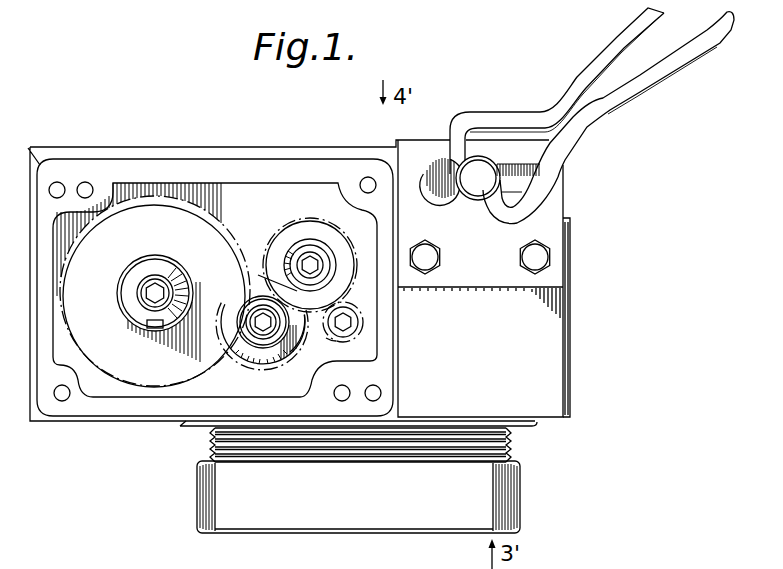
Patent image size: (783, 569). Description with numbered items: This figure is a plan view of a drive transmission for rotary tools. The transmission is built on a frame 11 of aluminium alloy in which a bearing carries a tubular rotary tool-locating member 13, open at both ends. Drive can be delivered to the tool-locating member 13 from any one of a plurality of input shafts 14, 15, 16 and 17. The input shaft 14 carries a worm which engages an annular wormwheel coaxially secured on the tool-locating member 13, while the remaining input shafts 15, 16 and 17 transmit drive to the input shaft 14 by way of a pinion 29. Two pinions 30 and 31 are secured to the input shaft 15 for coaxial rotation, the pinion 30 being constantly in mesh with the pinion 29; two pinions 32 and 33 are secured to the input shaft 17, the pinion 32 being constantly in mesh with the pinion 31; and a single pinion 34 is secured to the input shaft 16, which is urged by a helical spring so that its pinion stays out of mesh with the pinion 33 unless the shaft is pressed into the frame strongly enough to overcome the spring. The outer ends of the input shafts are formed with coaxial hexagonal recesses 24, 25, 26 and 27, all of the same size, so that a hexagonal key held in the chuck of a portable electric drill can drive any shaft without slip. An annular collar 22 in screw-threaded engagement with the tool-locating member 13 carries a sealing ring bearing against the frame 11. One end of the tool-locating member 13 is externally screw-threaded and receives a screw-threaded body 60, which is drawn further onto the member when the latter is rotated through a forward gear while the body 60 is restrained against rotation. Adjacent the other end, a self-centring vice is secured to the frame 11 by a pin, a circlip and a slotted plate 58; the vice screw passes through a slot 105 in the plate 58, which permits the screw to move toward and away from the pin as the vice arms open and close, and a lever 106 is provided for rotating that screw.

The frame 11 is at (553, 333).
The tubular rotary tool-locating member 13 is at (525, 440).
The input shaft 14 is at (127, 284).
The input shaft 15 is at (252, 319).
The input shaft 16 is at (336, 338).
The input shaft 17 is at (316, 256).
The annular collar 22 is at (197, 427).
The hexagonal recess 24 is at (148, 296).
The hexagonal recess 25 is at (257, 334).
The hexagonal recess 26 is at (358, 323).
The hexagonal recess 27 is at (309, 256).
The pinion 29 is at (228, 231).
The pinion 30 is at (261, 342).
The pinion 31 is at (273, 349).
The pinion 32 is at (336, 247).
The pinion 33 is at (279, 237).
The pinion 34 is at (358, 334).
The slotted plate 58 is at (545, 223).
The screw-threaded body 60 is at (226, 524).
The slot 105 is at (515, 160).
The lever 106 is at (590, 125).